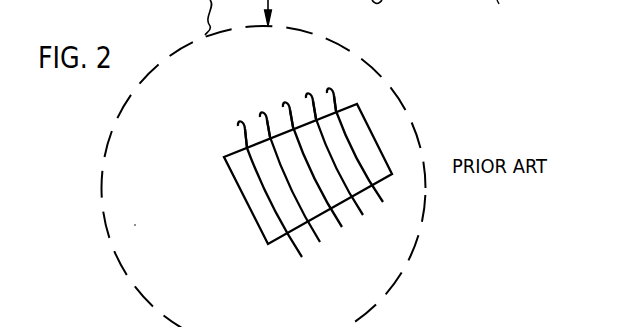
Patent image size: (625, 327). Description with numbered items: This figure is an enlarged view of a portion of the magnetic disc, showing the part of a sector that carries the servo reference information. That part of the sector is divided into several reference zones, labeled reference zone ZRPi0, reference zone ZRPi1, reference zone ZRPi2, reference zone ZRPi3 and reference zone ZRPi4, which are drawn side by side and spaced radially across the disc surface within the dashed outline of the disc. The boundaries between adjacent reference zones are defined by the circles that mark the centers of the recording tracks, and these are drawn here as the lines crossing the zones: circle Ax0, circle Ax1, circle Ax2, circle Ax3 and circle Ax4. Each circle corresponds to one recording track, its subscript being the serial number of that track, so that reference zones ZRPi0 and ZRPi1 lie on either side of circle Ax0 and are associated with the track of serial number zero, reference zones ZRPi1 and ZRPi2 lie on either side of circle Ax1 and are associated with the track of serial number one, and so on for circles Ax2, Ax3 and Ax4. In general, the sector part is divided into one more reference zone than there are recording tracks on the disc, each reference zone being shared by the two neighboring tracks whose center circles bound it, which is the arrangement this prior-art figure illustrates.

The circle Ax0 is at (286, 206).
The circle Ax1 is at (306, 194).
The circle Ax2 is at (328, 184).
The circle Ax3 is at (350, 172).
The circle Ax4 is at (371, 167).
The reference zone ZRPi0 is at (230, 154).
The reference zone ZRPi1 is at (239, 99).
The reference zone ZRPi2 is at (261, 90).
The reference zone ZRPi3 is at (284, 81).
The reference zone ZRPi4 is at (307, 71).